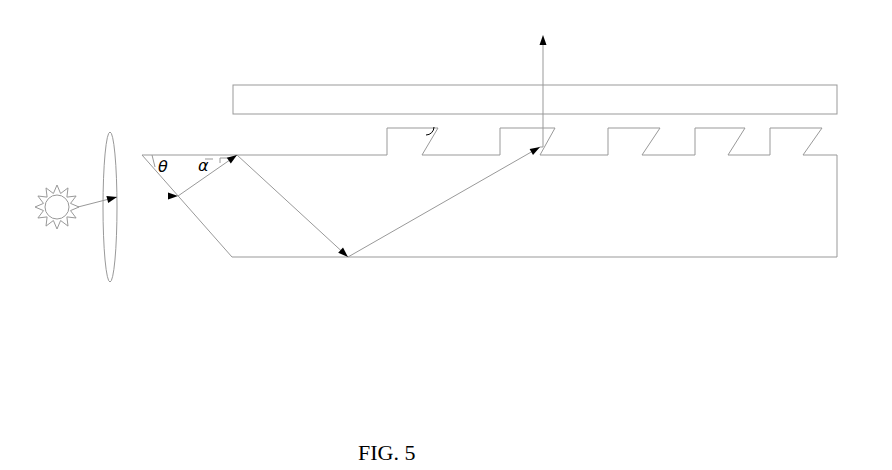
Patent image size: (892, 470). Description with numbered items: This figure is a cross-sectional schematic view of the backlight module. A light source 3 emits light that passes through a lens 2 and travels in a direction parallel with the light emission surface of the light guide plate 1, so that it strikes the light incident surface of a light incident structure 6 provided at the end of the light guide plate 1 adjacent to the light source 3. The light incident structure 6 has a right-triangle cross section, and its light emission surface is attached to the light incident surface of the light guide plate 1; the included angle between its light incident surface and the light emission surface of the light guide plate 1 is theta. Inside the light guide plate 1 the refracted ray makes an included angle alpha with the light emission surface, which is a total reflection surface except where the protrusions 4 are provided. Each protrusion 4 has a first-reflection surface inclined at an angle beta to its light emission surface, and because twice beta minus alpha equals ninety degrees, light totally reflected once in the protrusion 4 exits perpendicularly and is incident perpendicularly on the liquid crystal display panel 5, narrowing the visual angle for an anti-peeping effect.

The light guide plate 1 is at (322, 168).
The lens 2 is at (118, 238).
The light source 3 is at (60, 235).
The protrusions 4 is at (403, 147).
The liquid crystal display panel 5 is at (458, 103).
The light incident structure 6 is at (188, 158).